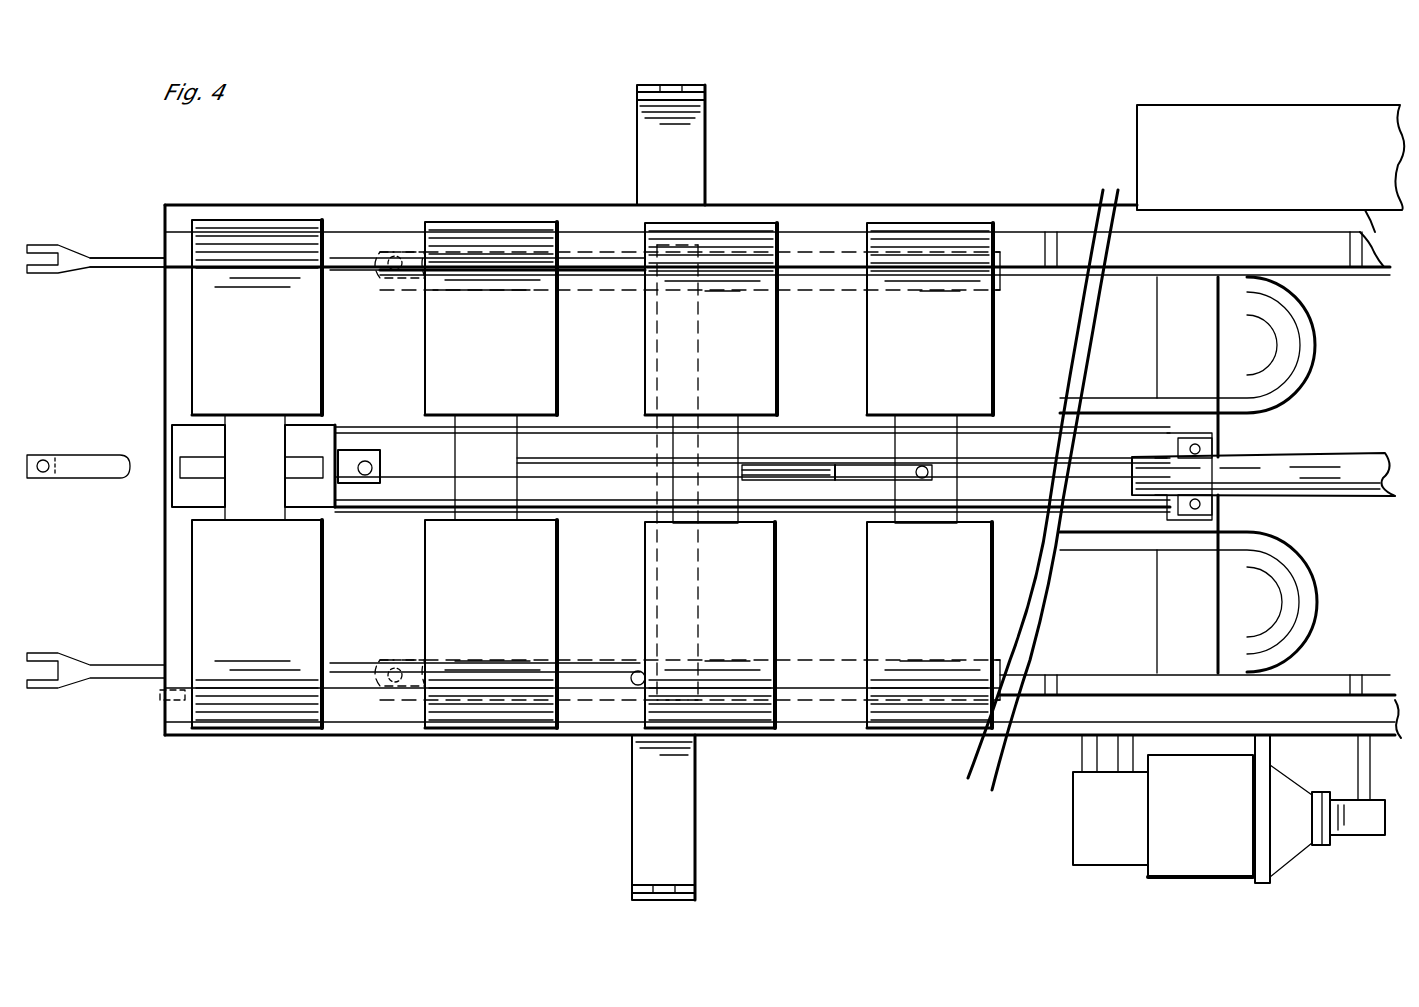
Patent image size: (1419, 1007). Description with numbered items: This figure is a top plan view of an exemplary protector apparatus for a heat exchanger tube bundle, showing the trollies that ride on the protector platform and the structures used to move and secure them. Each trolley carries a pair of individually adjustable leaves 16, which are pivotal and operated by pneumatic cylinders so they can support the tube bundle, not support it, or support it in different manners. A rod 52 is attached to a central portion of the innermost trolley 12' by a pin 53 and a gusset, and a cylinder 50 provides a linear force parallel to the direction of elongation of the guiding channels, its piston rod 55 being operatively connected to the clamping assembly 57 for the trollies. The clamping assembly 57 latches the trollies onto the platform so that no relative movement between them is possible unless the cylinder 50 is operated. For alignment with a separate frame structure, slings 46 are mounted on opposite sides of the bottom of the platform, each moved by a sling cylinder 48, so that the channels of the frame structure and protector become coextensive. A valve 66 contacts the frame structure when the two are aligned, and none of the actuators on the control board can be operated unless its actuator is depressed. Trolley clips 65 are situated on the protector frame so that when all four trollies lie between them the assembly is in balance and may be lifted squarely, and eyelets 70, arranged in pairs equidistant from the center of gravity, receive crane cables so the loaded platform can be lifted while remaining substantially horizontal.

The innermost trolley 12' is at (784, 447).
The individually adjustable leaves 16 is at (490, 376).
The slings 46 is at (108, 260).
The sling cylinder 48 is at (580, 282).
The cylinder 50 is at (1320, 460).
The rod 52 is at (113, 460).
The pin 53 is at (937, 470).
The piston rod 55 is at (1112, 475).
The clamping assembly 57 is at (172, 422).
The trolley clips 65 is at (1053, 268).
The valve 66 is at (157, 705).
The eyelets 70 is at (690, 88).